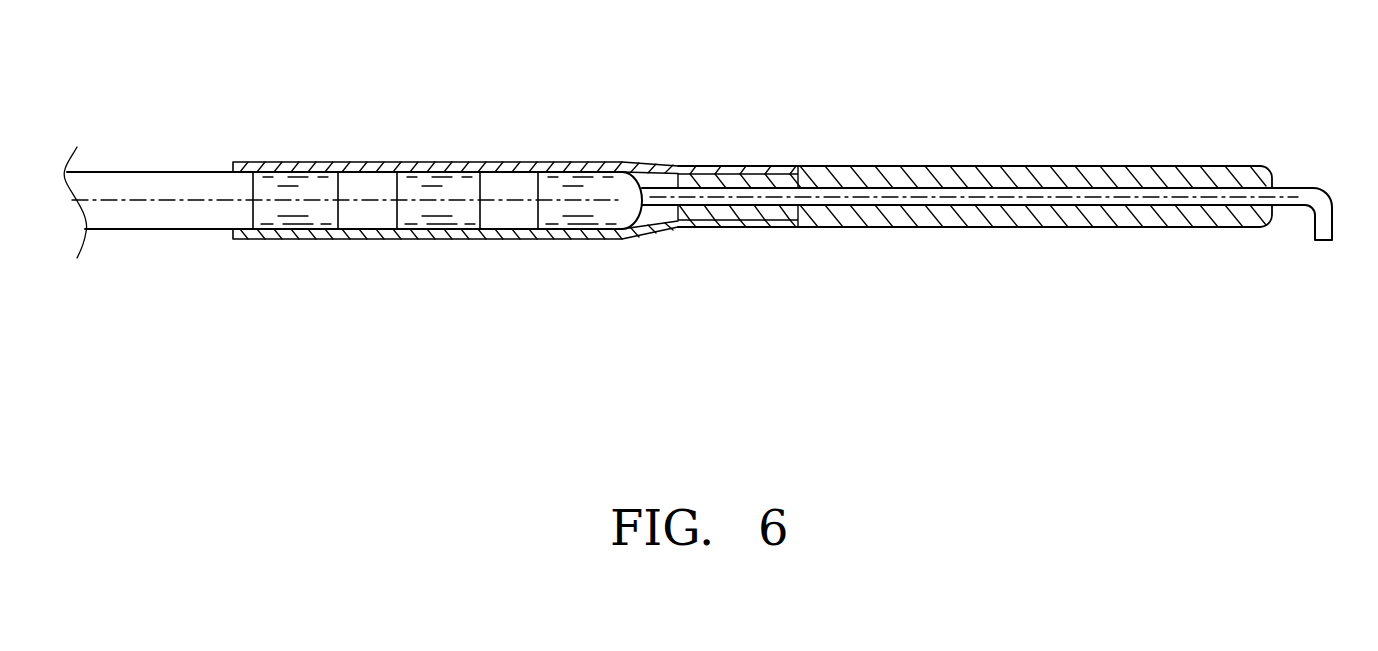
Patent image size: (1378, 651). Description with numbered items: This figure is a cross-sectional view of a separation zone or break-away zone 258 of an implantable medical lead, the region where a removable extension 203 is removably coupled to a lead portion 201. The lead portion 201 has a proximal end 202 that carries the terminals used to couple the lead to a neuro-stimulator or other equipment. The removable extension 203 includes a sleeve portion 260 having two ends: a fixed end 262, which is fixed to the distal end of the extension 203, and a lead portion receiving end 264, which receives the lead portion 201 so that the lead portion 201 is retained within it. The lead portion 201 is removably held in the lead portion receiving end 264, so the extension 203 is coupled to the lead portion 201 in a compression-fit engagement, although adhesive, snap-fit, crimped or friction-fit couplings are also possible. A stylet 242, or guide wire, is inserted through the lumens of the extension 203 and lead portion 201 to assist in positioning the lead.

The separation zone or break-away zone 258 is at (668, 80).
The proximal end 202 is at (162, 172).
The lead portion 201 is at (642, 263).
The removable extension 203 is at (1267, 238).
The lead portion receiving end 264 is at (433, 162).
The sleeve portion 260 is at (550, 162).
The fixed end 262 is at (738, 165).
The stylet 242 is at (1332, 222).